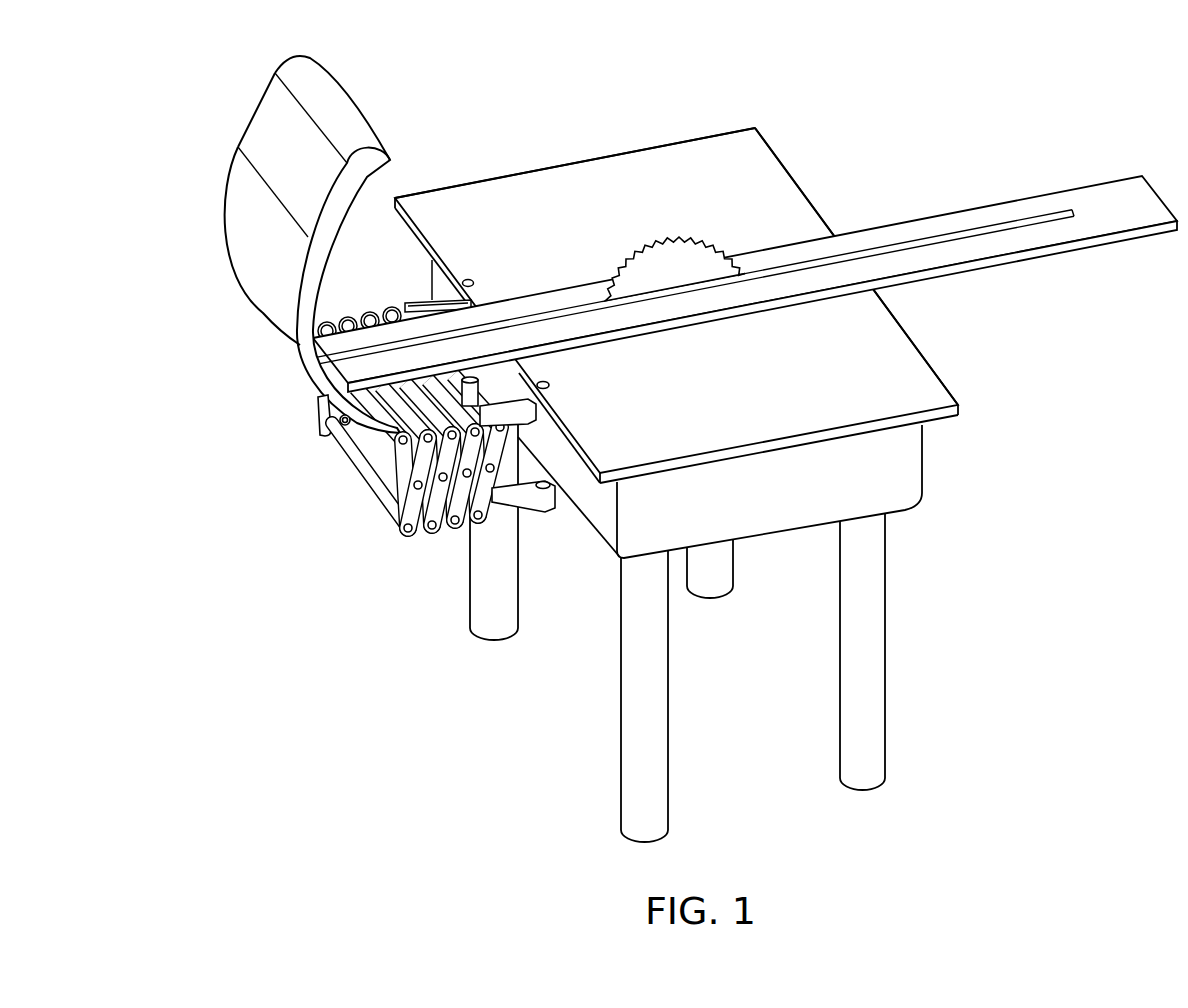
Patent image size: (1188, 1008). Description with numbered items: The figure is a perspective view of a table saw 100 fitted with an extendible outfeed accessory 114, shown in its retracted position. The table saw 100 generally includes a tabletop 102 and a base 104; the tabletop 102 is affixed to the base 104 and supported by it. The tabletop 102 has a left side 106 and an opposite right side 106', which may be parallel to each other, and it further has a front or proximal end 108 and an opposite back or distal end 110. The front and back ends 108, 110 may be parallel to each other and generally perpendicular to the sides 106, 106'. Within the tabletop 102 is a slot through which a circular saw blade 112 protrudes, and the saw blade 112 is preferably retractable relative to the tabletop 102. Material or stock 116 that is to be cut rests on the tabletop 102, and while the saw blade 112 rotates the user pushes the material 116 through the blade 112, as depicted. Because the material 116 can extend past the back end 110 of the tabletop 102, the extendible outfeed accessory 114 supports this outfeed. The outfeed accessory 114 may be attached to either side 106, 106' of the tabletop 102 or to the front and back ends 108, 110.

The table saw 100 is at (701, 421).
The tabletop 102 is at (676, 288).
The base 104 is at (769, 633).
The left side 106 is at (929, 607).
The right side 106' is at (575, 146).
The front or proximal end 108 is at (790, 162).
The back or distal end 110 is at (593, 480).
The saw blade 112 is at (697, 257).
The extendible outfeed accessory 114 is at (701, 294).
The material or stock 116 is at (993, 213).